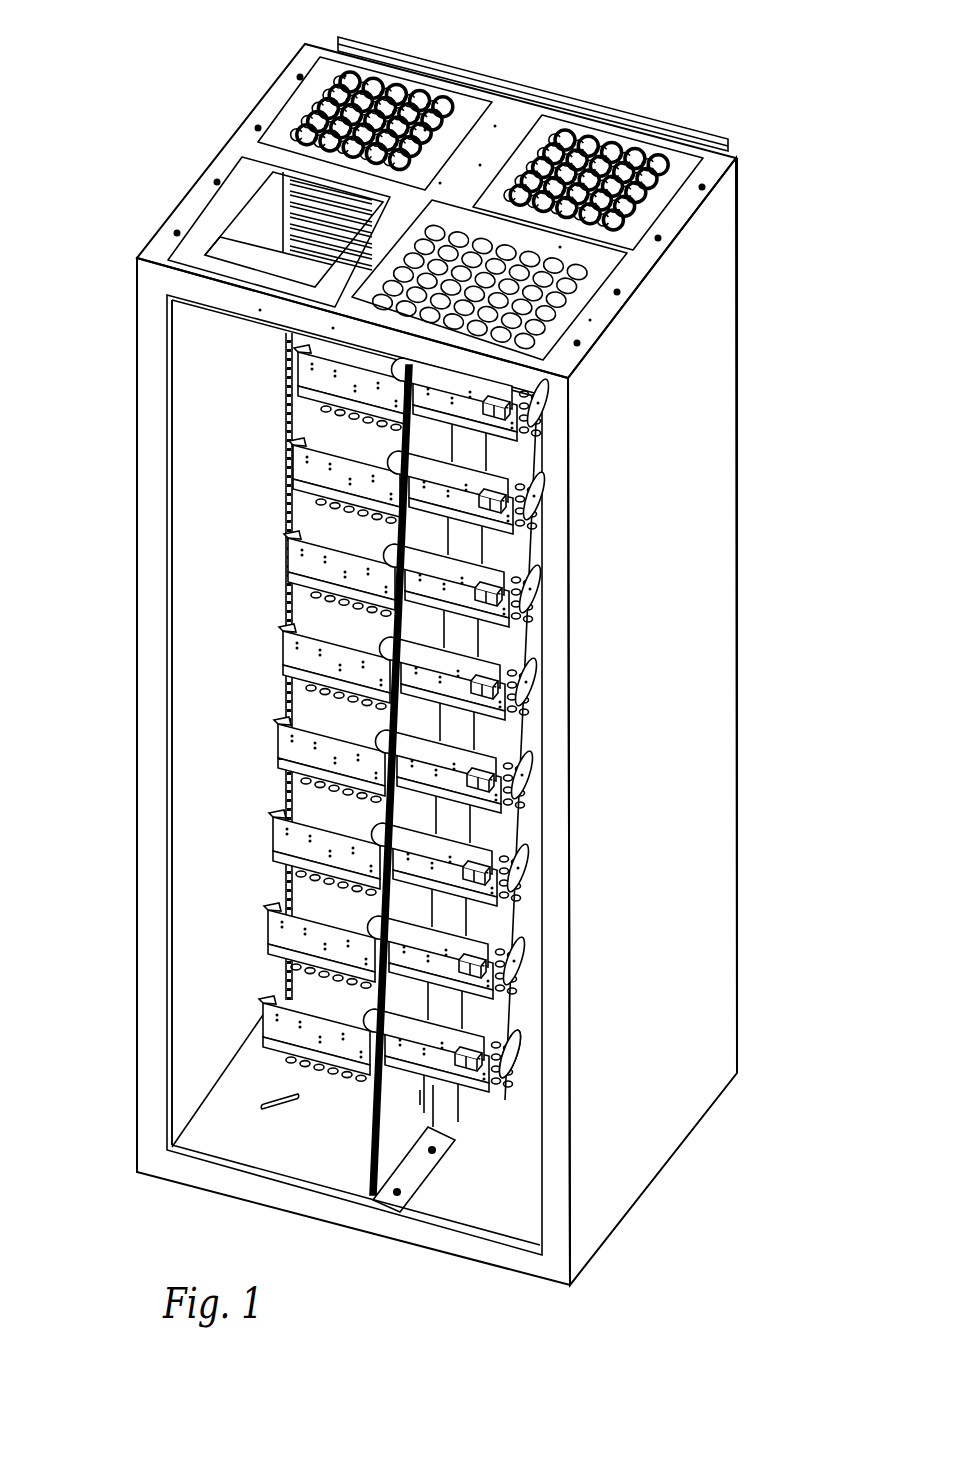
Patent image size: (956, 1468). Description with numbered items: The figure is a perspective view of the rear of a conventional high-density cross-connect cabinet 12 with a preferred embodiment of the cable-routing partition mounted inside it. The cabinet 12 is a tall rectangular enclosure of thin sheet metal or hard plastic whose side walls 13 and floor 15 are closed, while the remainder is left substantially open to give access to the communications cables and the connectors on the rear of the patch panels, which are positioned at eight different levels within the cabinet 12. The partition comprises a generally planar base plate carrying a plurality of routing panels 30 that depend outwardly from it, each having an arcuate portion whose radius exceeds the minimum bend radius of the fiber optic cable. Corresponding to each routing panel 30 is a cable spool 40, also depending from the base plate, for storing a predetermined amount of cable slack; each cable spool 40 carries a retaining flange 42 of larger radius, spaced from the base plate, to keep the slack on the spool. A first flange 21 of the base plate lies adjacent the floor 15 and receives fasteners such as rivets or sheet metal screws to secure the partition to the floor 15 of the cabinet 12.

The electrical cabinet 12 is at (683, 51).
The side walls 13 is at (195, 680).
The floor 15 is at (222, 1143).
The routing panels 30 is at (300, 553).
The cable spools 40 is at (458, 1036).
The retaining flange 42 is at (510, 1036).
The first flange 21 is at (413, 1170).